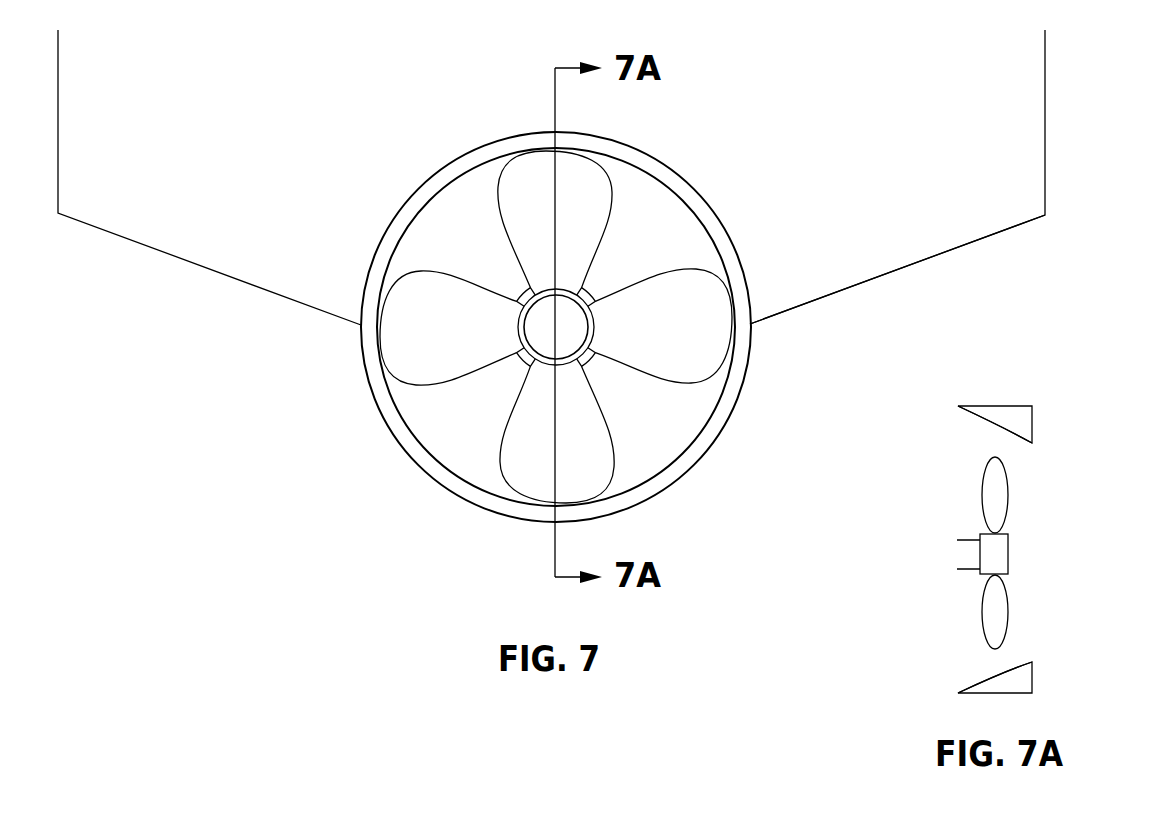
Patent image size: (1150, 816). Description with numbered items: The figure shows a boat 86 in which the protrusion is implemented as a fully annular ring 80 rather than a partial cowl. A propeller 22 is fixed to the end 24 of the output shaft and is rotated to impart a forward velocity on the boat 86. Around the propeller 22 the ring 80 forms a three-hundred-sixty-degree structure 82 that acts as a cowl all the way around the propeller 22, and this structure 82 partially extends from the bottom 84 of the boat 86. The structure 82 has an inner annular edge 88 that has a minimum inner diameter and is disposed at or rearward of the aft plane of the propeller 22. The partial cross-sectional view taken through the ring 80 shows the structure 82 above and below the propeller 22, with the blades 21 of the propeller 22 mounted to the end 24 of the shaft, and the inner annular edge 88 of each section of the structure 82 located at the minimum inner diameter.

In FIG. 7, the fan blade 21 is at (397, 348).
In FIG. 7A, the fan blade 21 is at (998, 483).
In FIG. 7, the propeller 22 is at (525, 327).
In FIG. 7A, the propeller 22 is at (1005, 553).
In FIG. 7A, the end of the output shaft 24 is at (963, 572).
In FIG. 7, the fully annular ring 80 is at (579, 308).
In FIG. 7, the 360° structure 82 is at (450, 177).
In FIG. 7A, the 360° structure 82 is at (1008, 406).
In FIG. 7, the bottom of the boat 84 is at (900, 270).
In FIG. 7, the boat 86 is at (551, 177).
In FIG. 7, the inner annular edge 88 is at (426, 446).
In FIG. 7A, the inner annular edge 88 is at (1008, 424).